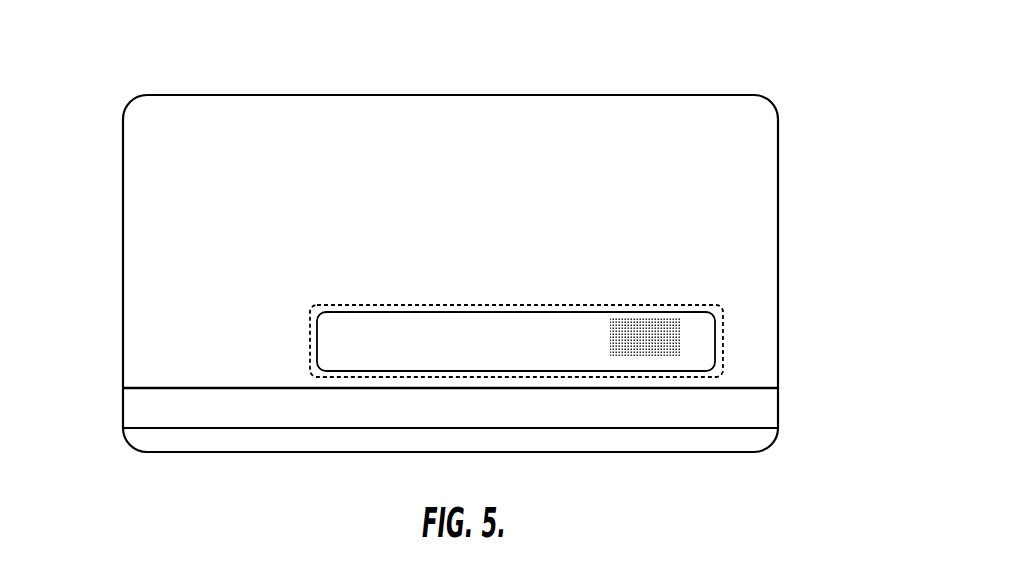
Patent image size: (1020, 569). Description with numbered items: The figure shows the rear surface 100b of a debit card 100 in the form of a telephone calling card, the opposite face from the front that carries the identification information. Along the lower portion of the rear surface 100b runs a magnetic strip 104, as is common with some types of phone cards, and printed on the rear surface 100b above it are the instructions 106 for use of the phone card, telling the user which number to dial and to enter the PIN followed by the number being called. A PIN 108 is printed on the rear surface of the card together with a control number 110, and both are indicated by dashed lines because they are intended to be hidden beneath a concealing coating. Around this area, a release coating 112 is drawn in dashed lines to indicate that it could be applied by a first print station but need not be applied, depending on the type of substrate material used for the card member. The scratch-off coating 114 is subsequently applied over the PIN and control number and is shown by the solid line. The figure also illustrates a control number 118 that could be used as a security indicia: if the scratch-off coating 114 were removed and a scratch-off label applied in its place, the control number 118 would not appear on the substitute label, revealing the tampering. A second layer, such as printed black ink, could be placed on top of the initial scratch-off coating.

The debit card 100 is at (493, 81).
The rear surface 100b is at (461, 143).
The magnetic strip 104 is at (758, 410).
The instructions 106 is at (140, 216).
The PIN 108 is at (493, 337).
The control number 110 is at (680, 323).
The release coating 112 is at (647, 305).
The scratch-off coating 114 is at (700, 355).
The control number 118 is at (357, 342).